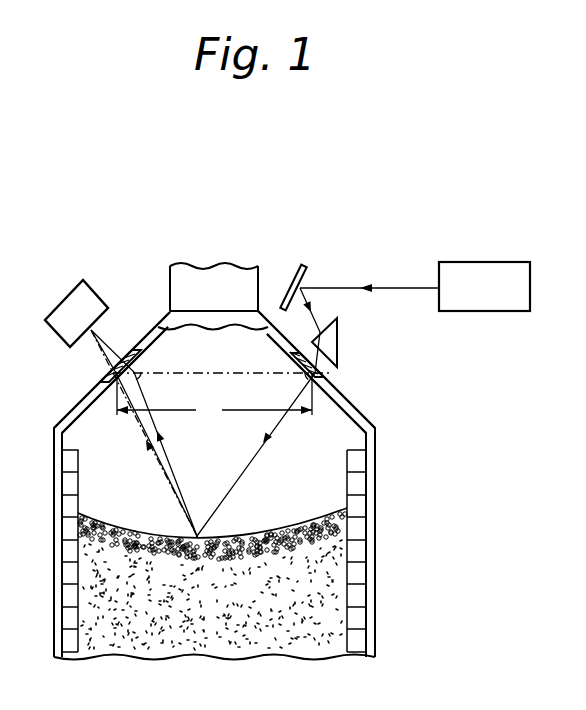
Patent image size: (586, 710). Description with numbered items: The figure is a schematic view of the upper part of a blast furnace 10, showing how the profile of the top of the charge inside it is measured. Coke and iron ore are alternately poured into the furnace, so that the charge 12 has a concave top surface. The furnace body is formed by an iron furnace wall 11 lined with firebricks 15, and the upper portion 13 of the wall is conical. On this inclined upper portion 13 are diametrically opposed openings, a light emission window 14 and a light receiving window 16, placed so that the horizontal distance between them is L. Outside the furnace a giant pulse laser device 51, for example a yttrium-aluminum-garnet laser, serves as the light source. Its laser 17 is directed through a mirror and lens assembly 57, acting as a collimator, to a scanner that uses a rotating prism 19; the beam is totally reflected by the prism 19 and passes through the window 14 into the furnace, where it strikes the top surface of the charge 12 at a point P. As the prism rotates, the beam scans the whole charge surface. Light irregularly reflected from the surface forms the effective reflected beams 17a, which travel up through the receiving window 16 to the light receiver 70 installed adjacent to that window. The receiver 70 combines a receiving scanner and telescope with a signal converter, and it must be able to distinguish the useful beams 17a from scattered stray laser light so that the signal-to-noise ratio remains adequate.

The blast furnace 10 is at (381, 508).
The iron furnace wall 11 is at (368, 557).
The charge 12 is at (268, 532).
The upper portion of the furnace wall 13 is at (72, 408).
The light emission window 14 is at (307, 365).
The firebricks 15 is at (358, 585).
The light receiving window 16 is at (131, 363).
The laser 17 is at (389, 285).
The irregularly reflected light beams 17a is at (170, 450).
The rotating prism 19 is at (340, 320).
The giant pulse laser device 51 is at (487, 262).
The mirror and lens assembly 57 is at (290, 277).
The light receiver 70 is at (62, 298).
The measuring point on melt surface P is at (193, 530).
The distance between the windows L is at (221, 398).